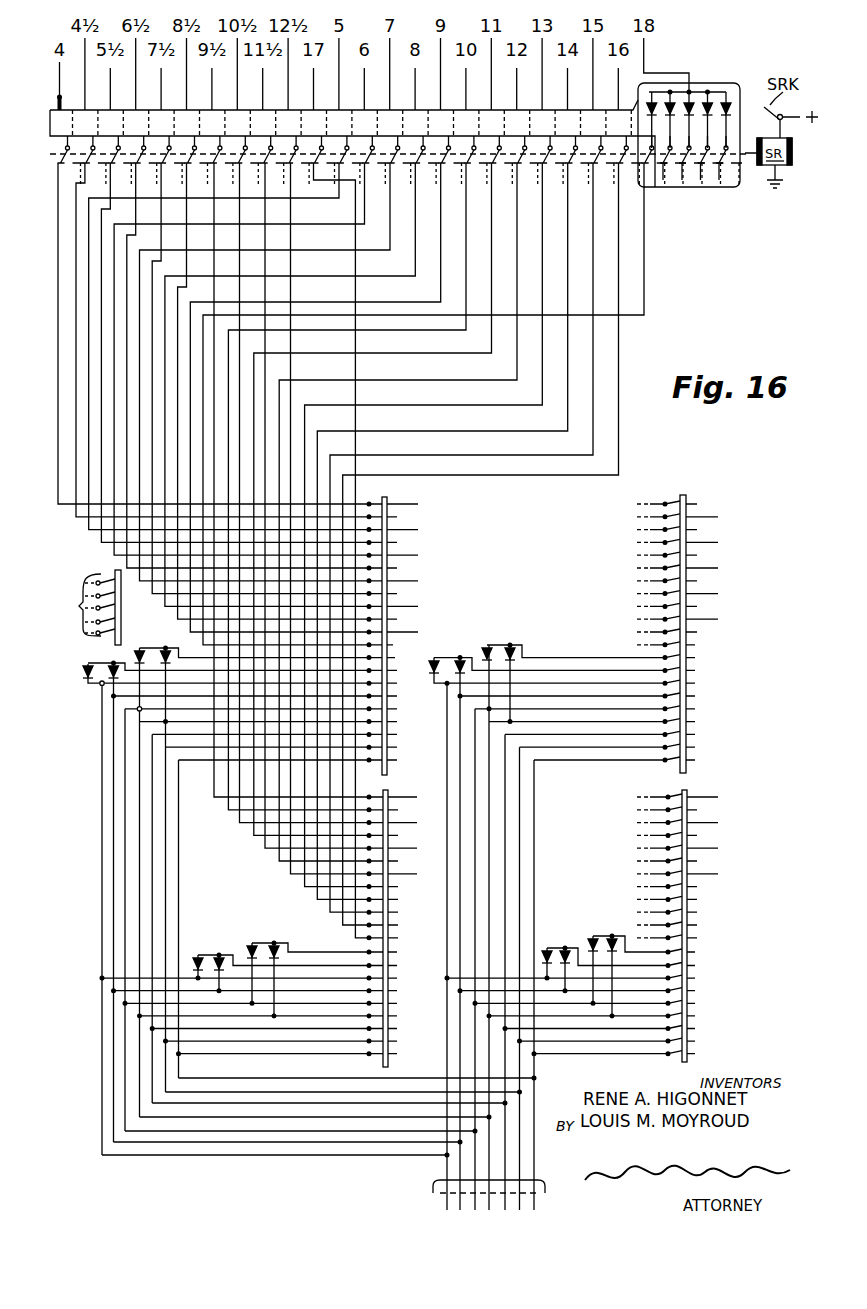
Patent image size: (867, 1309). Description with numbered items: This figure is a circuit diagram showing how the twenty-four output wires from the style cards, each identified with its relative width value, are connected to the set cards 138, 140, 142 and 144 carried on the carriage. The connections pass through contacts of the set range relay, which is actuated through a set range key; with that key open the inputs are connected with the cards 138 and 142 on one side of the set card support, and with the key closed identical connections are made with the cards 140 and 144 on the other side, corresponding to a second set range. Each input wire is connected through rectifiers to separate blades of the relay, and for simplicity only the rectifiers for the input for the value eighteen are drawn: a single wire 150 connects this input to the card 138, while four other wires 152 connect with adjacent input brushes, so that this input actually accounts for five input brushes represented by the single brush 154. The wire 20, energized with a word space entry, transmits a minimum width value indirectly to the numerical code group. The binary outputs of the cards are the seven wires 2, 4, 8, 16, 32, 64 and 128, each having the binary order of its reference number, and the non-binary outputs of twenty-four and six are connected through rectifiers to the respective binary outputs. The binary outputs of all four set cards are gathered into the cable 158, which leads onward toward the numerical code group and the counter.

The wire 20 is at (63, 96).
The set card 138 is at (386, 498).
The set card 140 is at (683, 495).
The set card 142 is at (386, 794).
The set card 144 is at (680, 790).
The wire 150 is at (648, 282).
The wires 152 is at (714, 175).
The input brush 154 is at (388, 655).
The cable 158 is at (440, 1182).
The wire 2 is at (448, 787).
The wire 4 is at (462, 803).
The wire 8 is at (476, 825).
The wire 16 is at (490, 847).
The wire 32 is at (505, 867).
The wire 64 is at (520, 887).
The wire 128 is at (535, 903).